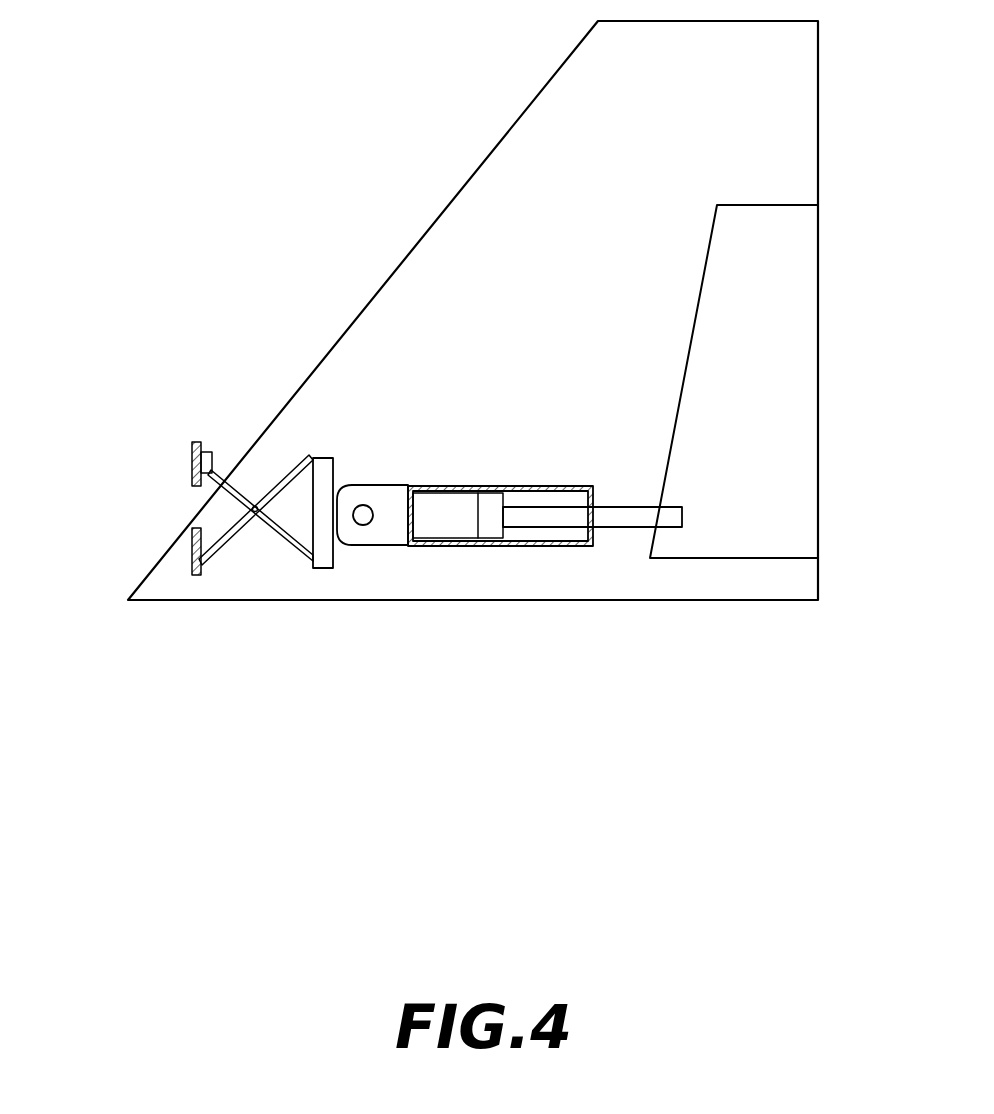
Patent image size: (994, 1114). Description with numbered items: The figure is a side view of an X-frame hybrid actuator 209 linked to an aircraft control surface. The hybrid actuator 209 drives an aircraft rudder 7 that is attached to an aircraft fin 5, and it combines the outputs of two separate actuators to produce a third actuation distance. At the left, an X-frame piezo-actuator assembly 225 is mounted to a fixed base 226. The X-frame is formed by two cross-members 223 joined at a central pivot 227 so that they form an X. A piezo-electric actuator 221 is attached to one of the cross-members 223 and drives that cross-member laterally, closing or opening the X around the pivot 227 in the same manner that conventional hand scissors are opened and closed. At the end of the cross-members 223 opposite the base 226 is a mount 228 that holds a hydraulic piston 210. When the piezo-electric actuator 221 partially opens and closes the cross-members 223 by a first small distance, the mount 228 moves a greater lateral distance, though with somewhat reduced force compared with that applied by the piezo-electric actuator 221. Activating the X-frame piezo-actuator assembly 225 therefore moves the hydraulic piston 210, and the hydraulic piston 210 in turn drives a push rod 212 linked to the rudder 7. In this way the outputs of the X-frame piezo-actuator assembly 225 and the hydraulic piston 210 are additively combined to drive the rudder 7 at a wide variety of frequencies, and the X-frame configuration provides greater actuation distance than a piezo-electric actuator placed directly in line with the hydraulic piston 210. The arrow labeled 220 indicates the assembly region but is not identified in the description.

The aircraft fin 5 is at (441, 268).
The aircraft rudder 7 is at (787, 347).
The hybrid actuator 209 is at (693, 760).
The hydraulic piston 210 is at (452, 486).
The push rod 212 is at (613, 528).
The deployable edge assembly 220 is at (128, 516).
The piezo-electric actuator 221 is at (206, 452).
The cross-members 223 is at (229, 537).
The X-frame piezo-actuator assembly 225 is at (342, 685).
The fixed base 226 is at (192, 452).
The central pivot 227 is at (255, 513).
The mount 228 is at (333, 562).